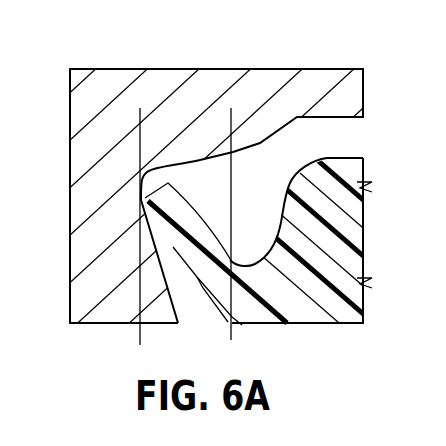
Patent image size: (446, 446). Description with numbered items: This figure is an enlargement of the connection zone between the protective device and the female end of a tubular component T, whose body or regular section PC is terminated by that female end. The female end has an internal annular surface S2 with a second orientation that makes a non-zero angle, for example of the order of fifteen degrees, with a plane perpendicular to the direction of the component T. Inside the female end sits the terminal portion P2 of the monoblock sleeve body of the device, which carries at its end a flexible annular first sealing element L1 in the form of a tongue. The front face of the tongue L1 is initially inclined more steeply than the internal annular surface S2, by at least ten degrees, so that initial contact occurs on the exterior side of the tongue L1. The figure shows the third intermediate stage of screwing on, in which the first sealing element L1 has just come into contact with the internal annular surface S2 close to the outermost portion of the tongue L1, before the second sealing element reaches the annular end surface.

The component T is at (88, 200).
The body or regular section PC is at (162, 78).
The internal annular surface S2 is at (150, 267).
The first sealing element L1 is at (186, 184).
The terminal portion P2 is at (365, 201).